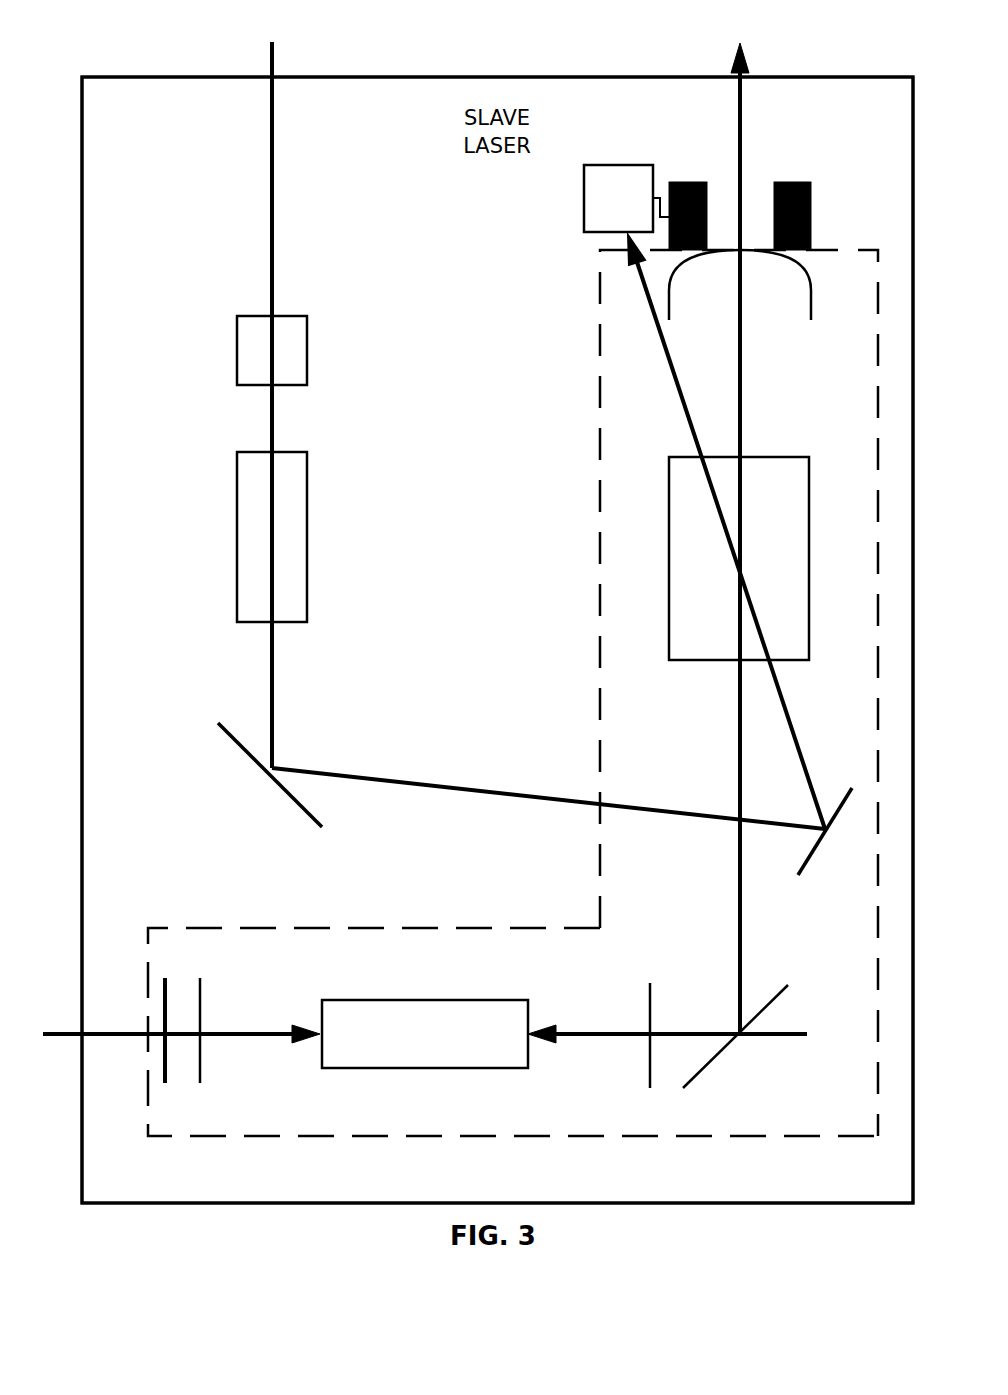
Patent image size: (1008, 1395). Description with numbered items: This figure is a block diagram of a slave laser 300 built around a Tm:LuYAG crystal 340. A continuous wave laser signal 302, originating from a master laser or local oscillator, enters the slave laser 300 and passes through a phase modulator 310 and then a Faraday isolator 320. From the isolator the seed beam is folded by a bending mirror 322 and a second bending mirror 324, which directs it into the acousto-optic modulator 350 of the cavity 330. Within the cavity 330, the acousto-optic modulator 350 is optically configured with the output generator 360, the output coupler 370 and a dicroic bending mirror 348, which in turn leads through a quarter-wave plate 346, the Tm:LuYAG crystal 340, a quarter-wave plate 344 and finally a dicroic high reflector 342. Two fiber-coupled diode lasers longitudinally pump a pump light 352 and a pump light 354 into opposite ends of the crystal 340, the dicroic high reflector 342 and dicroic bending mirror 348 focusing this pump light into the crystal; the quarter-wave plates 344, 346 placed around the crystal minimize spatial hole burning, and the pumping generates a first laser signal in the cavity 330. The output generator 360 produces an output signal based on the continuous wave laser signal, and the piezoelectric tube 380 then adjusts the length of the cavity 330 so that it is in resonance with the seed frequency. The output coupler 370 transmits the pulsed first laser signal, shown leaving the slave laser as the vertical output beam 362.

The slave laser 300 is at (497, 640).
The continuous wave laser signal 302 is at (274, 198).
The phase modulator 310 is at (308, 350).
The Faraday isolator 320 is at (308, 537).
The bending mirror 322 is at (316, 818).
The bending mirror 324 is at (806, 866).
The cavity 330 is at (599, 470).
The Tm:LuYAG crystal 340 is at (446, 1000).
The dicroic high reflector 342 is at (163, 1013).
The quarter-wave plate 344 is at (203, 1013).
The quarter-wave plate 346 is at (648, 1019).
The dicroic bending mirror 348 is at (720, 1053).
The acousto-optic modulator 350 is at (810, 515).
The pump light 352 is at (88, 1037).
The pump light 354 is at (780, 1040).
The output generator 360 is at (626, 198).
The output beam 362 is at (742, 424).
The output coupler 370 is at (811, 320).
The piezoelectric tube 380 is at (812, 217).